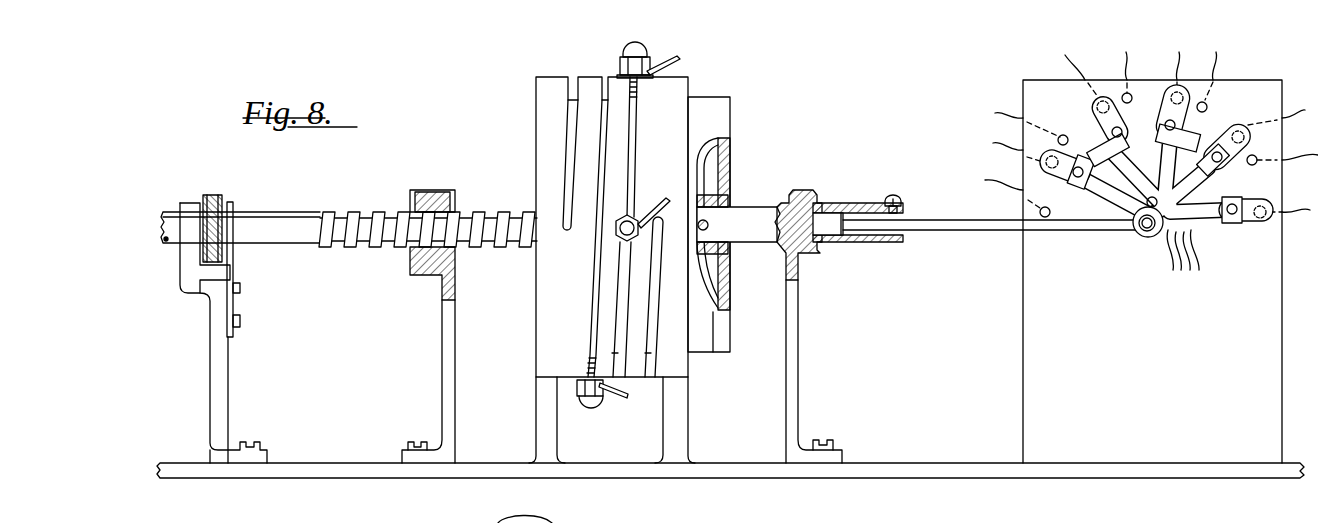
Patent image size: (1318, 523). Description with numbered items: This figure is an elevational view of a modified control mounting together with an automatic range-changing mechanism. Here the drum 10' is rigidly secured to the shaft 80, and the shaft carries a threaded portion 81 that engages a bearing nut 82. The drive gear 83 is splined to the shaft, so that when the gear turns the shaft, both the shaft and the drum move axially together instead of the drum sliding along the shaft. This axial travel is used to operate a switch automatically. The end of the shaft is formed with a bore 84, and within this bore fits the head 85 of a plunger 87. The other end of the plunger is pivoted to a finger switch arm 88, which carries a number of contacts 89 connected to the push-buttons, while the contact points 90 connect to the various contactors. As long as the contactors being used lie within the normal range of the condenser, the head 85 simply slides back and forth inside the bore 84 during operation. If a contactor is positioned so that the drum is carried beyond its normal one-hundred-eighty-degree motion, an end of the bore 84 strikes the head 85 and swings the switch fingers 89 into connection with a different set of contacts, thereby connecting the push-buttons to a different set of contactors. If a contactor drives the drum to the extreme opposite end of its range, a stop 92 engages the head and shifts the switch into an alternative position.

The drum 10' is at (733, 216).
The shaft 80 is at (771, 242).
The threaded portion 81 is at (490, 248).
The bearing nut 82 is at (445, 207).
The drive gear 83 is at (238, 182).
The bore 84 is at (827, 217).
The head 85 is at (843, 237).
The plunger 87 is at (953, 231).
The finger switch arm 88 is at (1088, 185).
The contacts 89 is at (1250, 223).
The contact points 90 is at (1254, 165).
The stop 92 is at (897, 212).